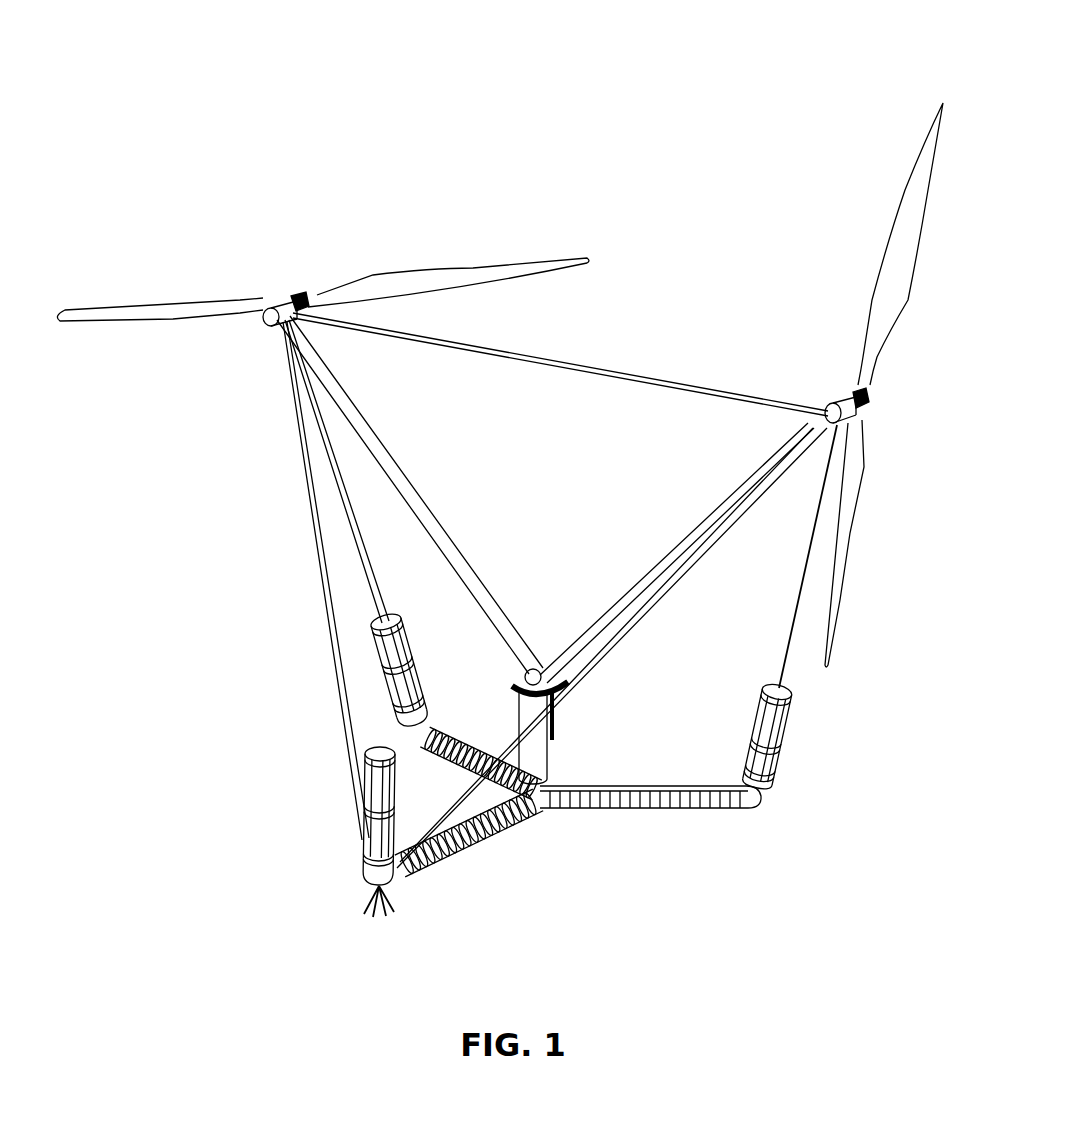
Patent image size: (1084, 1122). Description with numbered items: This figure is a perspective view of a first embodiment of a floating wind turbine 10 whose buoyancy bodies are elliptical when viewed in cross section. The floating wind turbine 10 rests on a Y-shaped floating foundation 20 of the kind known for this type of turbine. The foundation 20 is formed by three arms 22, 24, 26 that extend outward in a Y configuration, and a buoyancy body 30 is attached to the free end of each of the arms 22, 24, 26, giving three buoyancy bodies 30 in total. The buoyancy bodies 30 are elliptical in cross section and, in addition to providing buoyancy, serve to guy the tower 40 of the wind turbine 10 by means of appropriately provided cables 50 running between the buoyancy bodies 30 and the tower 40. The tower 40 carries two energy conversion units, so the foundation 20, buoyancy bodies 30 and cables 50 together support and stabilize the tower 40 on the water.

The floating wind turbine 10 is at (664, 106).
The Y-shaped floating foundation 20 is at (613, 840).
The arm 22 is at (430, 866).
The arm 24 is at (693, 807).
The arm 26 is at (447, 766).
The buoyancy body 30 is at (387, 660).
The tower 40 is at (404, 527).
The cable 50 is at (588, 697).